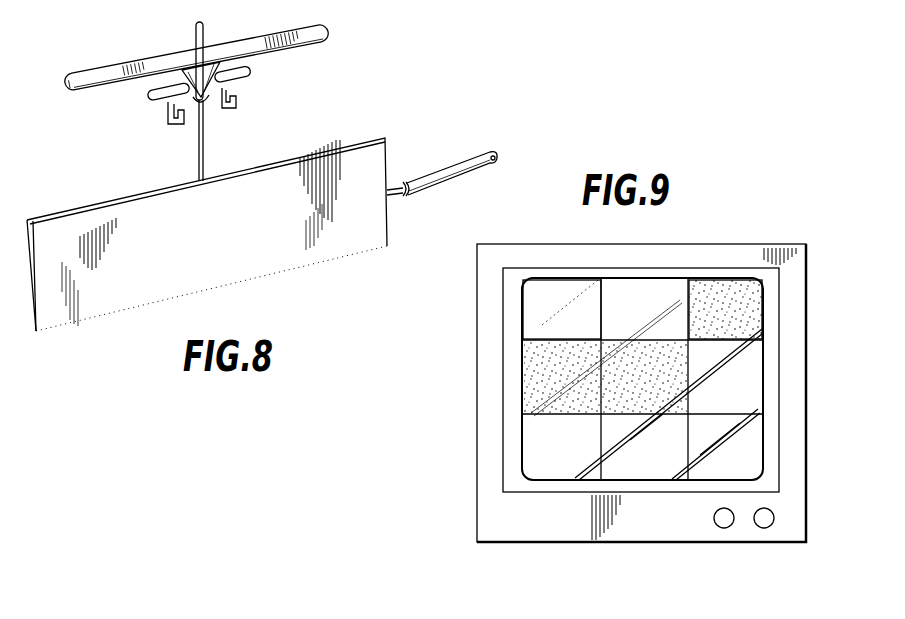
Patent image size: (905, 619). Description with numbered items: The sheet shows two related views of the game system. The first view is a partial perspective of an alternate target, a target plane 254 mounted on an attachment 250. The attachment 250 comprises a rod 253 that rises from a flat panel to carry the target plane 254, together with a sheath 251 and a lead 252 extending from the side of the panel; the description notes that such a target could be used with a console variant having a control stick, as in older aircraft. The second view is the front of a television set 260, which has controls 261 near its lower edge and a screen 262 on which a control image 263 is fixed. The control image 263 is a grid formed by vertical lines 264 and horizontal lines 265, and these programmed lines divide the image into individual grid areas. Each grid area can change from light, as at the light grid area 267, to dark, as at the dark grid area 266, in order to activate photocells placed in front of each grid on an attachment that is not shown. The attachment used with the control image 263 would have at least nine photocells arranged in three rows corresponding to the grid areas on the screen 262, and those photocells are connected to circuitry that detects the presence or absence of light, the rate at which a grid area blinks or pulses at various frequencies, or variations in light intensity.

In FIG. 8, the attachment 250 is at (345, 240).
In FIG. 8, the sheath 251 is at (404, 184).
In FIG. 8, the lead 252 is at (447, 175).
In FIG. 8, the rod 253 is at (205, 147).
In FIG. 8, the target plane 254 is at (273, 47).
In FIG. 9, the television set 260 is at (477, 338).
In FIG. 9, the controls 261 is at (774, 518).
In FIG. 9, the screen 262 is at (503, 290).
In FIG. 9, the control image 263 is at (520, 428).
In FIG. 9, the vertical lines 264 is at (595, 470).
In FIG. 9, the horizontal lines 265 is at (752, 418).
In FIG. 9, the dark grid area 266 is at (730, 297).
In FIG. 9, the light grid area 267 is at (550, 297).